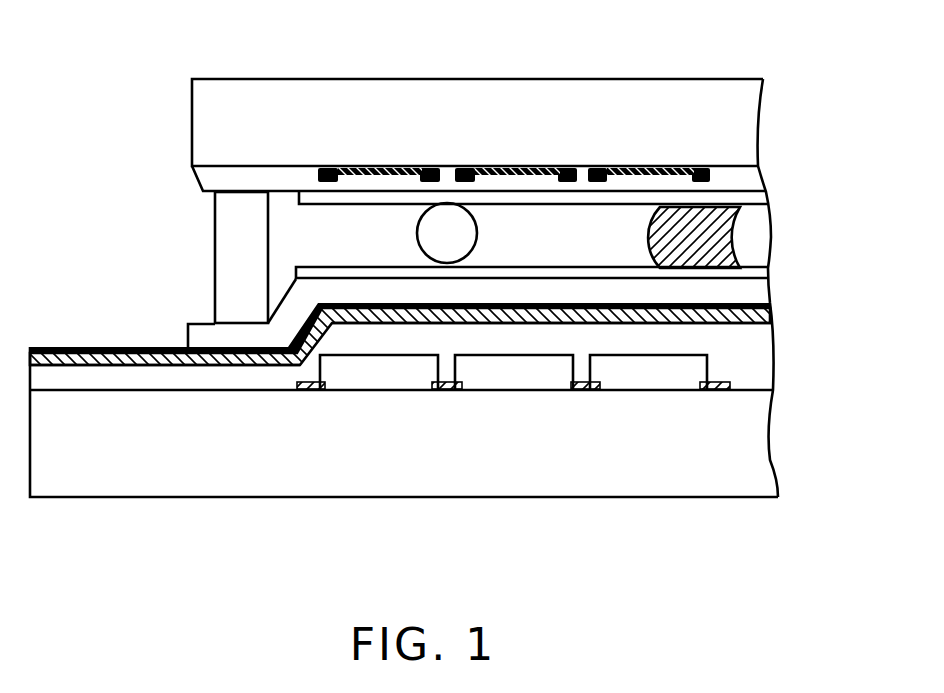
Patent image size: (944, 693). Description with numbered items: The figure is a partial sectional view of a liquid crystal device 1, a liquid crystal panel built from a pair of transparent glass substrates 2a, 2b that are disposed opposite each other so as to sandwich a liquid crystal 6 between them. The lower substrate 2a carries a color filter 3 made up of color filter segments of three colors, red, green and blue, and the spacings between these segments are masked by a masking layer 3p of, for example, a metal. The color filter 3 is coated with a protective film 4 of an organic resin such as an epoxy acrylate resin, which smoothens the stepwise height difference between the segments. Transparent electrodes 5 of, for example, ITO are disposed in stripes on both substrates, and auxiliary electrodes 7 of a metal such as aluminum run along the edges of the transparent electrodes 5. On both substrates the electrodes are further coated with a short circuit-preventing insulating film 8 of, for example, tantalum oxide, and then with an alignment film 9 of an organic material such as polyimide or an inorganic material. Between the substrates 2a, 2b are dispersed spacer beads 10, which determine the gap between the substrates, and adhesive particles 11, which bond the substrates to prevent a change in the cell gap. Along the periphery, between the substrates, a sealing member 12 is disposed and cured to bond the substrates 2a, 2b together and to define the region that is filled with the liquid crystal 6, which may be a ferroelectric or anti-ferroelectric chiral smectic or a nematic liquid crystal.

The liquid crystal device 1 is at (133, 170).
The transparent glass substrate 2a is at (70, 497).
The transparent glass substrate 2b is at (192, 108).
The color filter 3 is at (375, 392).
The masking layer 3p is at (312, 395).
The protective film 4 is at (768, 362).
The transparent electrodes 5 is at (382, 167).
The liquid crystal 6 is at (285, 253).
The auxiliary electrodes 7 is at (323, 167).
The short circuit-preventing insulating film 8 is at (762, 178).
The alignment film 9 is at (768, 200).
The spacer beads 10 is at (416, 234).
The adhesive particles 11 is at (740, 235).
The sealing member 12 is at (213, 288).